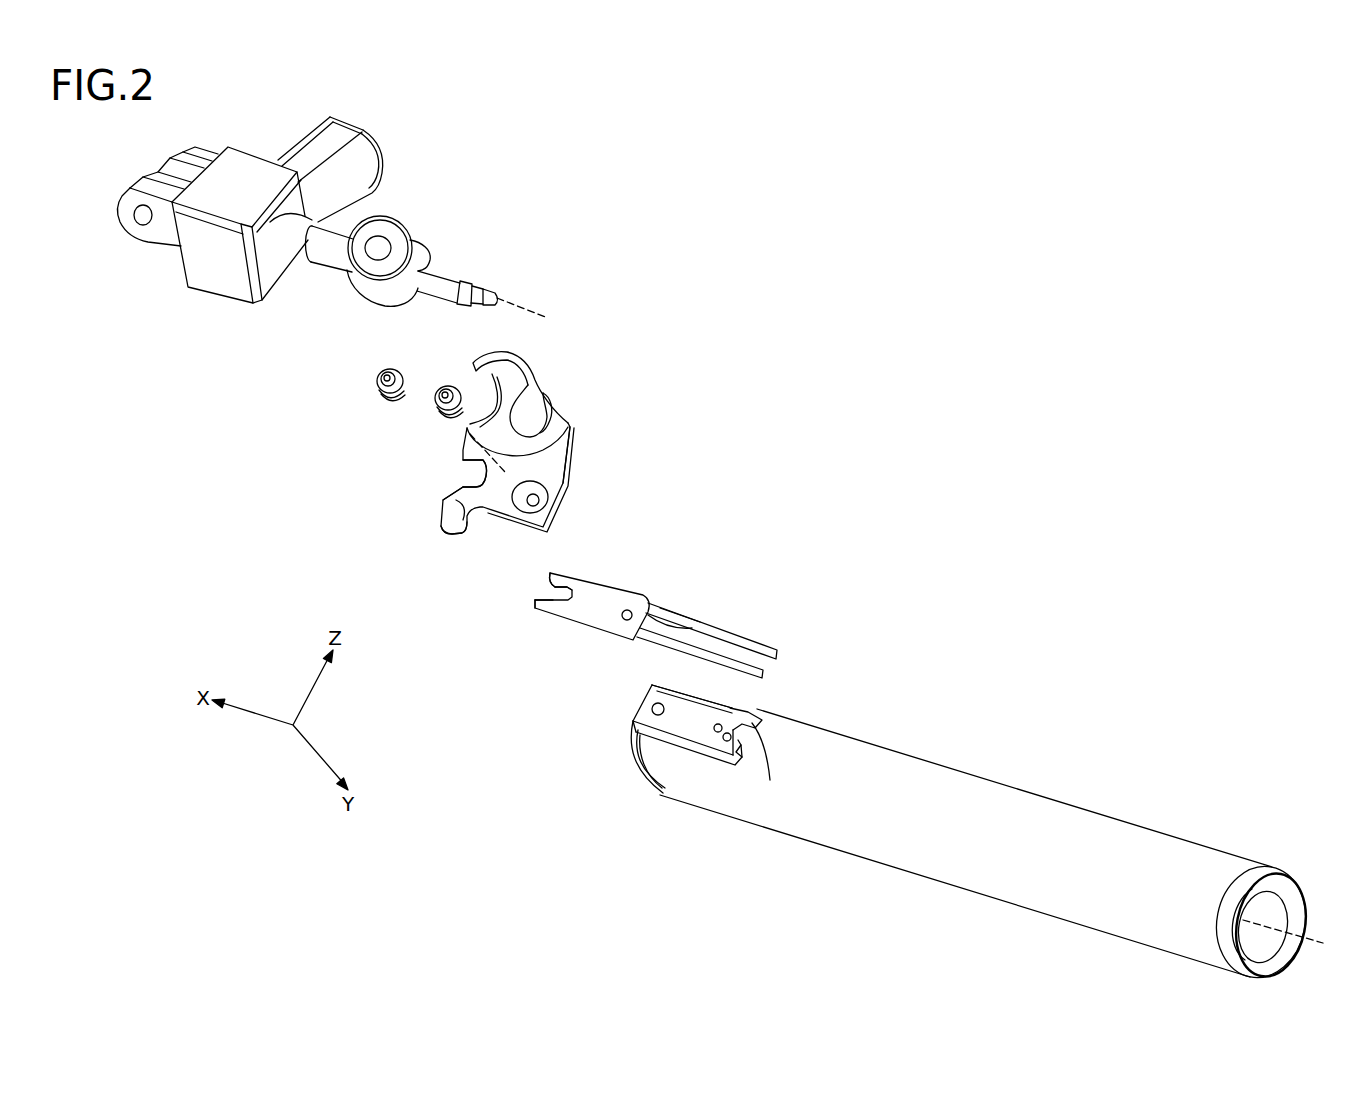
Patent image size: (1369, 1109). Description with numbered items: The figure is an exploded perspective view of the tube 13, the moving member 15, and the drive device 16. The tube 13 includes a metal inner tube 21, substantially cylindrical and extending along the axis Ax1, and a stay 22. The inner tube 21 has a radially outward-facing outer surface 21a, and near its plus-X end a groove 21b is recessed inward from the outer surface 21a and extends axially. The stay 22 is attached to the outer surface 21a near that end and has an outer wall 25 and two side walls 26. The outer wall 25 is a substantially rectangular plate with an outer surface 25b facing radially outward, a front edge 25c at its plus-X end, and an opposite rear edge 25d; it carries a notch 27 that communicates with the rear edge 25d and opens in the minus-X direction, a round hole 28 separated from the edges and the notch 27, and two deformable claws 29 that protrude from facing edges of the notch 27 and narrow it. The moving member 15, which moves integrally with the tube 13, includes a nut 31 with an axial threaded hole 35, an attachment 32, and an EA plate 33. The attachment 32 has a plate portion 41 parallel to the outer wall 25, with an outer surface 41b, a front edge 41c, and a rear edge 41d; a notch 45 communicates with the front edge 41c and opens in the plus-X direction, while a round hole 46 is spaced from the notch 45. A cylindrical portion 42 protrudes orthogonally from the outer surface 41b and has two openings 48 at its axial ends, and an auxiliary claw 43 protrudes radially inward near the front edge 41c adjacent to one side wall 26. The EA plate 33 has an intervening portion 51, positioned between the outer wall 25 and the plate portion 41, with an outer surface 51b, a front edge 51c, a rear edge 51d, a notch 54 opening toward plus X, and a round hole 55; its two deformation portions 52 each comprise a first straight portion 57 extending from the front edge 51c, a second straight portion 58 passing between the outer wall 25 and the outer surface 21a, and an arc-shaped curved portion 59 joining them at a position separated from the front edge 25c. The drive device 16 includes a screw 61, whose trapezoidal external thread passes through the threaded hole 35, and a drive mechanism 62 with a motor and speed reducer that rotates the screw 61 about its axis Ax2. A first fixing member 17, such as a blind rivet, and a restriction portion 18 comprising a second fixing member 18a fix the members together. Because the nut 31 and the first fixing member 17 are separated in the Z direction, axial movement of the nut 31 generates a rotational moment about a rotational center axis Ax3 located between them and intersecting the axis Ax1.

The tube 13 is at (902, 812).
The moving member 15 is at (673, 225).
The drive device 16 is at (249, 243).
The first fixing member 17 is at (437, 408).
The restriction portion 18 is at (335, 389).
The second fixing member 18a is at (378, 398).
The inner tube 21 is at (977, 847).
The outer surface 21a is at (978, 792).
The groove 21b is at (720, 743).
The stay 22 is at (660, 781).
The outer wall 25 is at (596, 739).
The outer surface 25b is at (645, 712).
The front edge 25c is at (640, 704).
The rear edge 25d is at (738, 731).
The side walls 26 is at (765, 714).
The notch 27 is at (745, 708).
The hole 28 is at (658, 722).
The claws 29 is at (723, 747).
The nut 31 is at (430, 248).
The attachment 32 is at (487, 421).
The EA plate 33 is at (594, 479).
The threaded hole 35 is at (420, 295).
The plate portion 41 is at (463, 482).
The outer surface 41b is at (497, 505).
The front edge 41c is at (462, 491).
The rear edge 41d is at (566, 498).
The cylindrical portion 42 is at (517, 353).
The auxiliary claw 43 is at (446, 532).
The notch 45 is at (462, 473).
The hole 46 is at (533, 507).
The openings 48 is at (473, 362).
The intervening portion 51 is at (625, 564).
The outer surface 51b is at (610, 593).
The front edge 51c is at (543, 597).
The rear edge 51d is at (693, 619).
The deformation portions 52 is at (761, 646).
The notch 54 is at (562, 601).
The hole 55 is at (627, 619).
The first straight portion 57 is at (558, 573).
The second straight portion 58 is at (735, 636).
The curved portion 59 is at (550, 572).
The screw 61 is at (338, 254).
The drive mechanism 62 is at (188, 288).
The axis Ax1 is at (1325, 944).
The axis of the screw Ax2 is at (527, 299).
The rotational center axis Ax3 is at (468, 431).